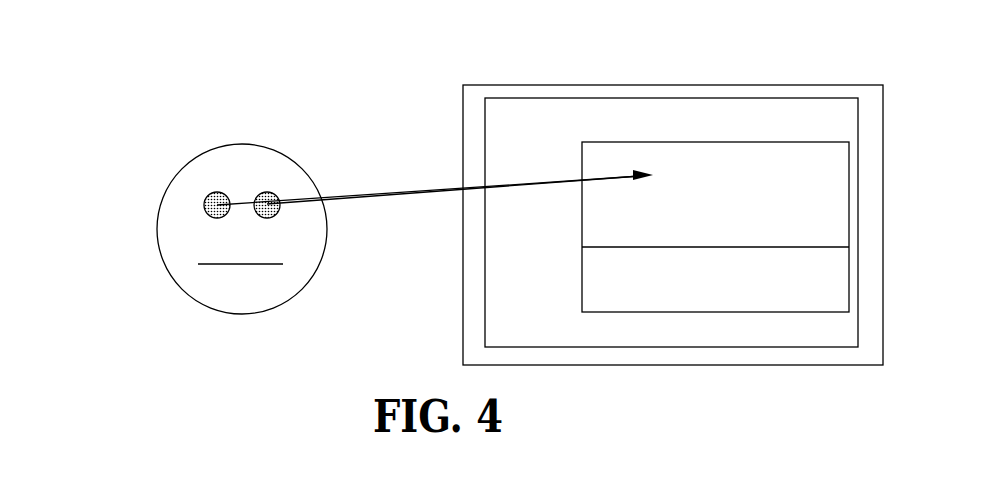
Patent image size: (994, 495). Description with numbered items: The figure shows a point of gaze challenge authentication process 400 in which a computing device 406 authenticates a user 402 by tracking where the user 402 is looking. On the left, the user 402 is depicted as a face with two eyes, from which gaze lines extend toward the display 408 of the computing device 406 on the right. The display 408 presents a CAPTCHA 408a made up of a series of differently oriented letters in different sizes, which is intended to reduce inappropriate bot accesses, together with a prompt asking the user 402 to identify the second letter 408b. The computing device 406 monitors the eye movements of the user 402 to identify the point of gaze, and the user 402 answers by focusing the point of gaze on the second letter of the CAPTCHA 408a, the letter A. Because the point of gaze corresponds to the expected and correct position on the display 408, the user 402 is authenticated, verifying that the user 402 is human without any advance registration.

The point of gaze challenge authentication process 400 is at (105, 161).
The user 402 is at (300, 162).
The computing device 406 is at (463, 110).
The display 408 is at (645, 113).
The CAPTCHA 408a is at (740, 242).
The second letter 408b is at (740, 306).